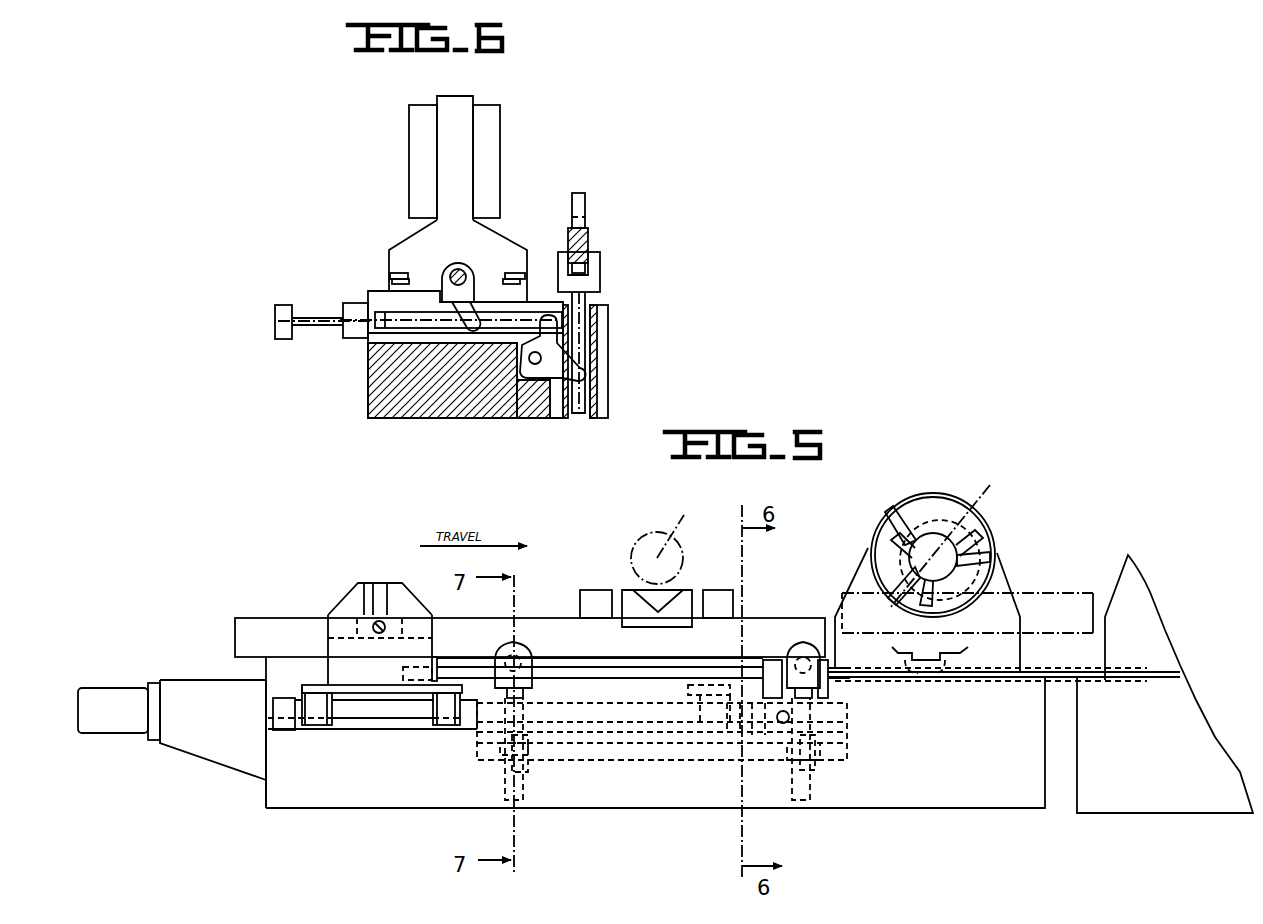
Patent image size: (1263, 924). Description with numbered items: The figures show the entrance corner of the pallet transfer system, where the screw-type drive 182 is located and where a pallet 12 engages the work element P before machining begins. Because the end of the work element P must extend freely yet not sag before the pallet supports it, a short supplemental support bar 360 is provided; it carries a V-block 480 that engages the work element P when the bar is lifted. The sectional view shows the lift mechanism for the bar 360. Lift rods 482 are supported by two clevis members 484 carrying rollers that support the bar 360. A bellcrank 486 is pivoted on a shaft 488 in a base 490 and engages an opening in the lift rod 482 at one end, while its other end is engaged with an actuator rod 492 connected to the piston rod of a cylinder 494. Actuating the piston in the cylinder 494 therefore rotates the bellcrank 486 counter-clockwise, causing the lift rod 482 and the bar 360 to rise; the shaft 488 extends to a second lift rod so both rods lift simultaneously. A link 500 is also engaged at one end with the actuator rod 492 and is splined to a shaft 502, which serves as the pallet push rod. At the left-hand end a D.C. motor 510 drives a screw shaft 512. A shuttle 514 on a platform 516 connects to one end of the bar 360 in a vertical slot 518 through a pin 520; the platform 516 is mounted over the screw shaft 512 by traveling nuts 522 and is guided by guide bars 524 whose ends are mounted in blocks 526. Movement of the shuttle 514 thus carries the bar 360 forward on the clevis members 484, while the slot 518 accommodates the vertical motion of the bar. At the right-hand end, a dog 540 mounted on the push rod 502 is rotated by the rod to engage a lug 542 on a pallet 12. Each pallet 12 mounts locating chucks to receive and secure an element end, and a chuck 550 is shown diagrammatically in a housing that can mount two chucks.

In FIG. 5, the pallet 12 is at (1010, 651).
In FIG. 5, the screw-type drive 182 is at (205, 648).
In FIG. 6, the supplemental support bar 360 is at (590, 236).
In FIG. 5, the supplemental support bar 360 is at (483, 617).
In FIG. 5, the V-block 480 is at (630, 598).
In FIG. 6, the lift rod 482 is at (577, 338).
In FIG. 5, the lift rod 482 is at (505, 785).
In FIG. 6, the clevis member 484 is at (602, 276).
In FIG. 5, the clevis member 484 is at (524, 659).
In FIG. 6, the bellcrank 486 is at (553, 368).
In FIG. 6, the shaft 488 is at (533, 366).
In FIG. 5, the shaft 488 is at (573, 764).
In FIG. 6, the base 490 is at (409, 418).
In FIG. 5, the base 490 is at (365, 806).
In FIG. 6, the actuator rod 492 is at (394, 316).
In FIG. 6, the cylinder 494 is at (320, 328).
In FIG. 6, the link 500 is at (479, 276).
In FIG. 6, the shaft 502 is at (458, 270).
In FIG. 5, the shaft 502 is at (668, 673).
In FIG. 5, the D.C. motor 510 is at (222, 750).
In FIG. 5, the screw shaft 512 is at (268, 692).
In FIG. 5, the shuttle 514 is at (335, 597).
In FIG. 5, the platform 516 is at (318, 688).
In FIG. 5, the vertical slot 518 is at (380, 592).
In FIG. 5, the pin 520 is at (388, 620).
In FIG. 5, the traveling nut 522 is at (435, 727).
In FIG. 5, the guide bar 524 is at (648, 716).
In FIG. 5, the block 526 is at (287, 700).
In FIG. 5, the dog 540 is at (918, 676).
In FIG. 5, the lug 542 is at (943, 658).
In FIG. 6, the chuck 550 is at (510, 139).
In FIG. 5, the chuck 550 is at (950, 494).
In FIG. 5, the work element P is at (825, 544).